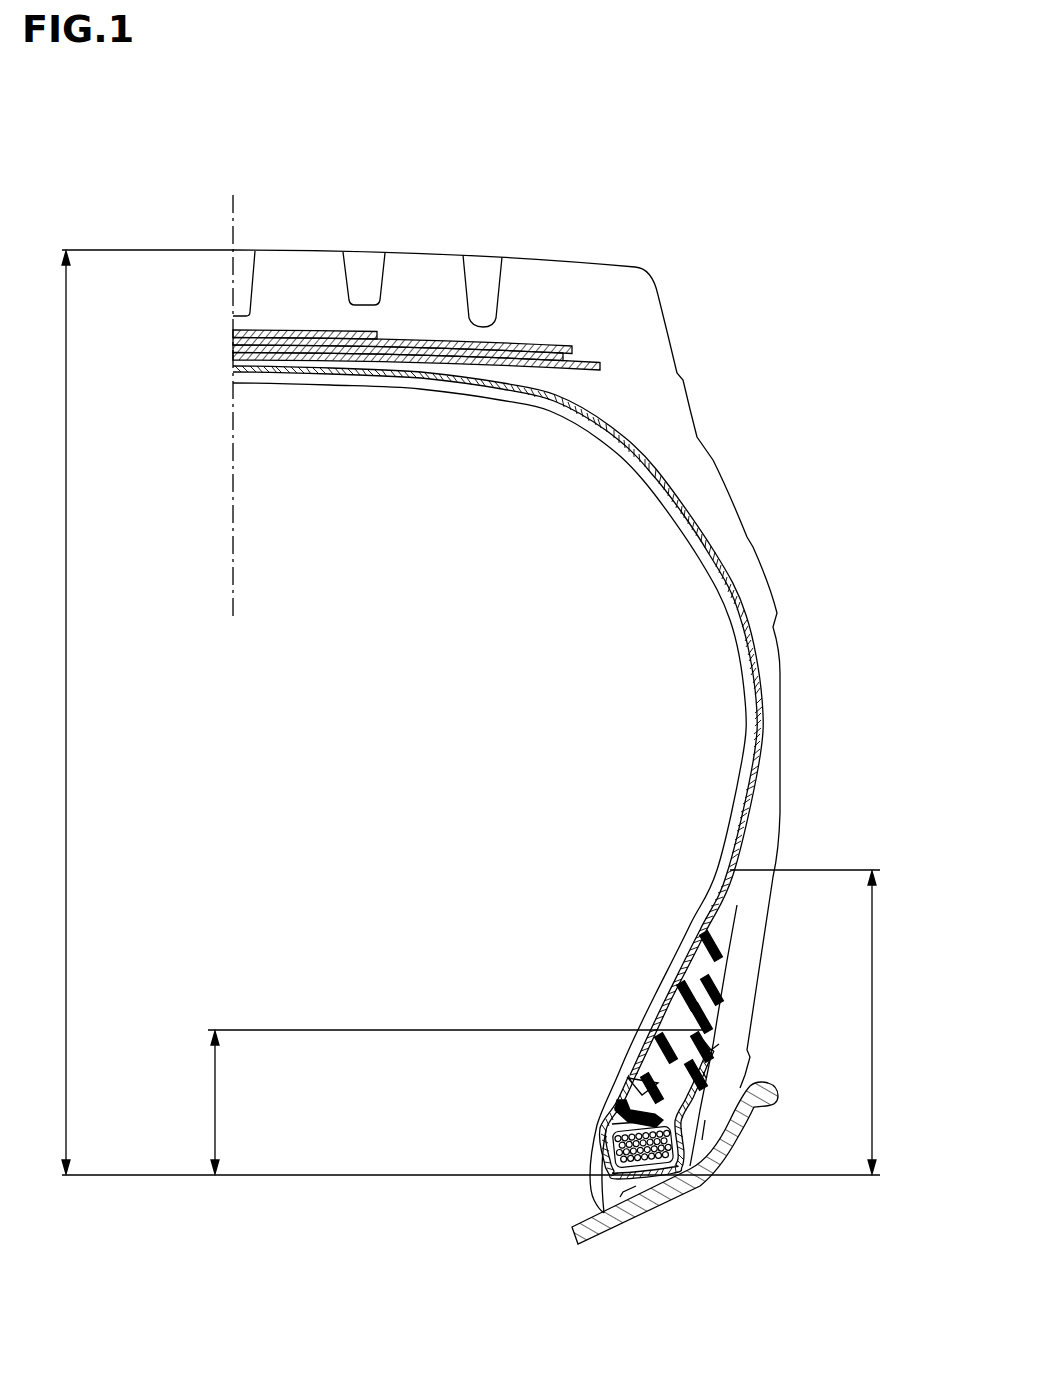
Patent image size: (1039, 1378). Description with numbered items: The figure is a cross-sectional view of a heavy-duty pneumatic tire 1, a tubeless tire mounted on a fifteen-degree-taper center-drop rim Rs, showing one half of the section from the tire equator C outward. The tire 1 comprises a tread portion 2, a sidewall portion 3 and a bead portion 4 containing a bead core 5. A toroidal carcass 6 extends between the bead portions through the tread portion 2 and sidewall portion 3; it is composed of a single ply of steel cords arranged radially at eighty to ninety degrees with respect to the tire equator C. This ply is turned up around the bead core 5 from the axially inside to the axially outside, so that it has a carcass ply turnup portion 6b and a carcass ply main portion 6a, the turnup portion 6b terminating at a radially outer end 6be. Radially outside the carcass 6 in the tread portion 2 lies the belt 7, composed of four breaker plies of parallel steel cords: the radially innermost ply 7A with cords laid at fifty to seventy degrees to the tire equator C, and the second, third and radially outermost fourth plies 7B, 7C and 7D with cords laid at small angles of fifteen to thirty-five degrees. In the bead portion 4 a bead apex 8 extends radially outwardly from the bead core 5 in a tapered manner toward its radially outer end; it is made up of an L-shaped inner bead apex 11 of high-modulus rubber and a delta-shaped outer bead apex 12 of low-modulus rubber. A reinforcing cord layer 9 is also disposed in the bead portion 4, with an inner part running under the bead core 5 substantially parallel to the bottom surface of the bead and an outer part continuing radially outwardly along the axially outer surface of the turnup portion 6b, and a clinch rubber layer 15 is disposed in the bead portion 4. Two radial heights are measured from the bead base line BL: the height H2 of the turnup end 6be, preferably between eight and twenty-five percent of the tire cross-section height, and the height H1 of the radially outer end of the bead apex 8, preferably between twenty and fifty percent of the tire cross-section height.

The heavy-duty pneumatic tire 1 is at (626, 218).
The tread portion 2 is at (430, 244).
The sidewall portion 3 is at (802, 722).
The bead portion 4 is at (566, 1146).
The bead core 5 is at (697, 1186).
The carcass 6 is at (548, 880).
The carcass ply main portion 6a is at (722, 942).
The carcass ply turnup portion 6b is at (713, 1013).
The radially outer end of the carcass ply turnup portion 6be is at (707, 1033).
The belt 7 is at (150, 290).
The radially innermost belt ply 7A is at (233, 358).
The second belt ply 7B is at (233, 350).
The third belt ply 7C is at (233, 342).
The radially outermost fourth belt ply 7D is at (233, 334).
The bead apex 8 is at (662, 1102).
The reinforcing cord layer 9 is at (703, 1075).
The inner bead apex 11 is at (622, 1128).
The outer bead apex 12 is at (660, 1080).
The clinch rubber layer 15 is at (708, 1128).
The tire equator C is at (234, 393).
The radial height of the radially outer end of the bead apex H1 is at (470, 712).
The radial height of the radially outer end of the carcass ply turnup portion H2 is at (449, 1102).
The bead base line BL is at (320, 1178).
The rim Rs is at (577, 1226).